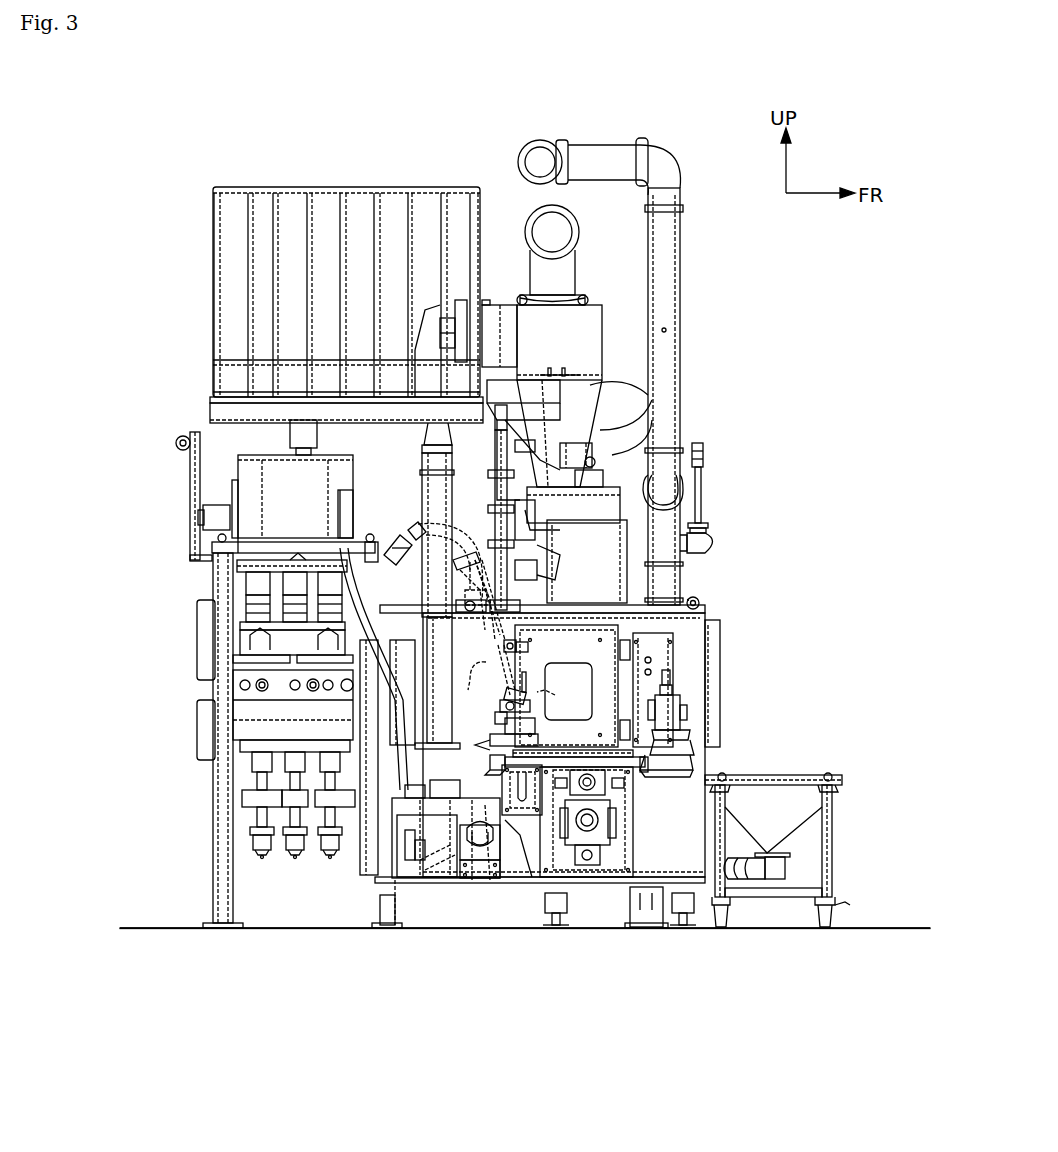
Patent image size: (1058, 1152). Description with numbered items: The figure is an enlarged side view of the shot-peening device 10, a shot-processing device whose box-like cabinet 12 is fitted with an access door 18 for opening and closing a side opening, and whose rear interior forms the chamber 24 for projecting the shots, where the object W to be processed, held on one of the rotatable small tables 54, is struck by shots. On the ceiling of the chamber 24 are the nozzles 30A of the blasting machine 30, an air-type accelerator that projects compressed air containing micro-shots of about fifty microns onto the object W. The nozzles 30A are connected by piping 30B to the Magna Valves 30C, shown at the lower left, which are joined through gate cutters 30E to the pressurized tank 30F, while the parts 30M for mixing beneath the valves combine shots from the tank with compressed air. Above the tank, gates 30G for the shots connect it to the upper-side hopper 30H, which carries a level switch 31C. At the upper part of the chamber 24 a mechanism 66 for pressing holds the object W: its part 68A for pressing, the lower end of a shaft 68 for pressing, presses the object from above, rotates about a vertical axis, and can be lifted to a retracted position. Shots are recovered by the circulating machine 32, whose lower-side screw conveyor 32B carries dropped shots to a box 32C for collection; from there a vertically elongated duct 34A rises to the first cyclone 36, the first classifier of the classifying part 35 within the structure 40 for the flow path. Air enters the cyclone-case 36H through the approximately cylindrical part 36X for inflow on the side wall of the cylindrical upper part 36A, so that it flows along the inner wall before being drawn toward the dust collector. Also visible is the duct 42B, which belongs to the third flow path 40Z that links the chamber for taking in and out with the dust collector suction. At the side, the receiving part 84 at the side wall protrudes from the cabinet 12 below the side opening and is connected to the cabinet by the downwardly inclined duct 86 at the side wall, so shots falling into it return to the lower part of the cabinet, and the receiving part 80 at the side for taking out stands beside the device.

The shot-peening device 10 is at (847, 330).
The cabinet 12 is at (712, 697).
The access door 18 is at (620, 672).
The chamber for projecting the shots 24 is at (492, 546).
The blasting machine 30 is at (405, 500).
The nozzles 30A is at (490, 637).
The piping 30B is at (386, 548).
The Magna Valves 30C is at (270, 850).
The gate cutters 30E is at (270, 808).
The pressurized tank 30F is at (262, 685).
The gates for the shots 30G is at (250, 592).
The upper-side hopper 30H is at (245, 467).
The parts for mixing 30M is at (330, 858).
The level switch 31C is at (200, 503).
The circulating machine 32 is at (520, 860).
The lower-side screw conveyor 32B is at (480, 880).
The box for collection 32C is at (460, 880).
The duct 34A is at (420, 880).
The classifying part 35 is at (592, 250).
The first cyclone 36 is at (612, 315).
The upper part of the cyclone-case 36A is at (602, 350).
The cyclone-case 36H is at (608, 372).
The part for inflow 36X is at (502, 310).
The structure for the flow path 40 is at (652, 122).
The third flow path 40Z is at (693, 425).
The duct 42B is at (670, 268).
The small tables 54 is at (566, 752).
The mechanism for pressing 66 is at (512, 585).
The shaft for pressing 68 is at (526, 660).
The part for pressing 68A is at (568, 691).
The object to be processed W is at (540, 712).
The receiving part at the side for taking out 80 is at (805, 830).
The receiving part at the side wall 84 is at (690, 738).
The duct at the side wall 86 is at (524, 822).